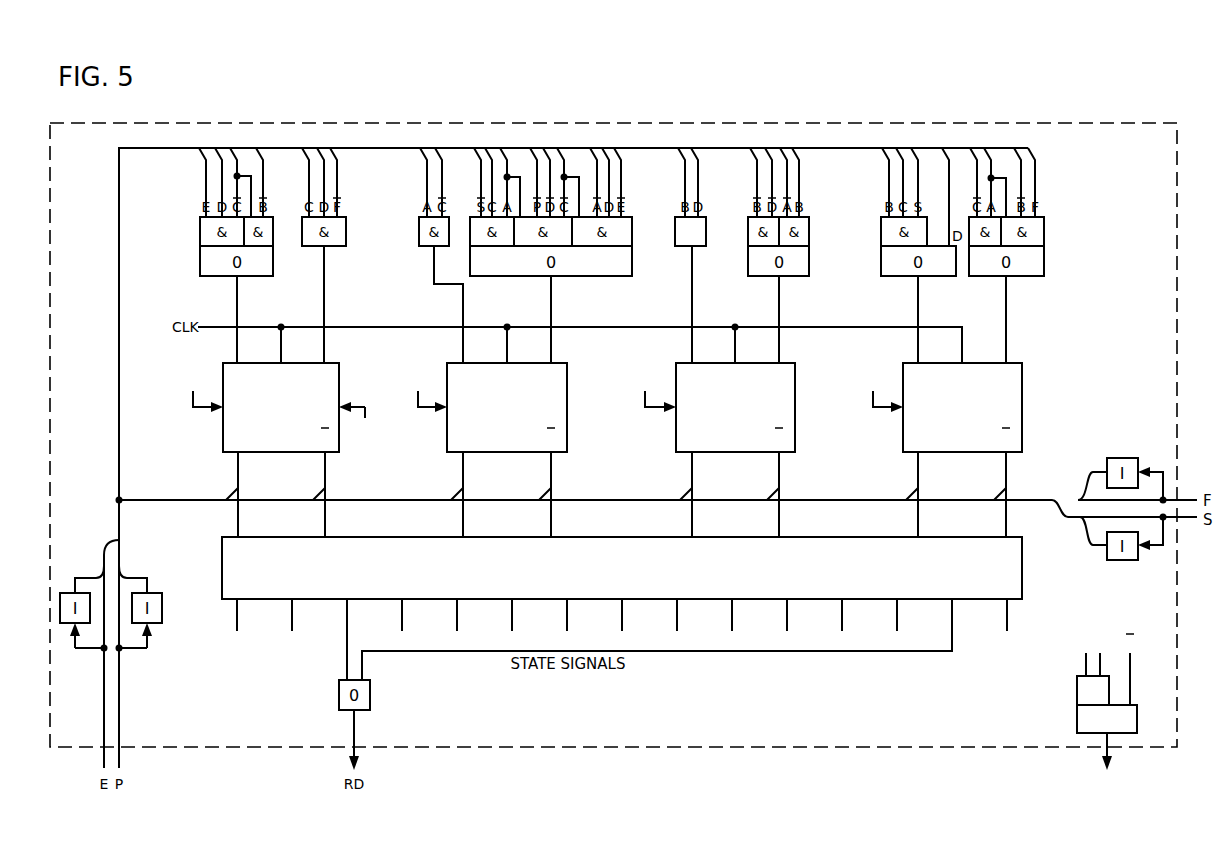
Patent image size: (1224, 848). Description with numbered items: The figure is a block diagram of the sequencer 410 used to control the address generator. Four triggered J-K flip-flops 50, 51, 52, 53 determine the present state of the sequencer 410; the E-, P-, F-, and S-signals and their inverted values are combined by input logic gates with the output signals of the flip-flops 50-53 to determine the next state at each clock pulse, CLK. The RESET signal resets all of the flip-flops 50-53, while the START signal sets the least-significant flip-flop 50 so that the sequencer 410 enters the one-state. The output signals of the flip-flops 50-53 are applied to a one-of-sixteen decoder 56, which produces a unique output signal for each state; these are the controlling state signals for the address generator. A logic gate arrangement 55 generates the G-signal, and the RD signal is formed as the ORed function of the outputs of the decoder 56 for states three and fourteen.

The sequencer 410 is at (713, 123).
The least-significant flip-flop 50 is at (337, 364).
The J-K flip-flop 51 is at (565, 364).
The J-K flip-flop 52 is at (793, 364).
The J-K flip-flop 53 is at (1024, 364).
The logic gate arrangement 55 is at (1077, 716).
The decoder 56 is at (1022, 581).